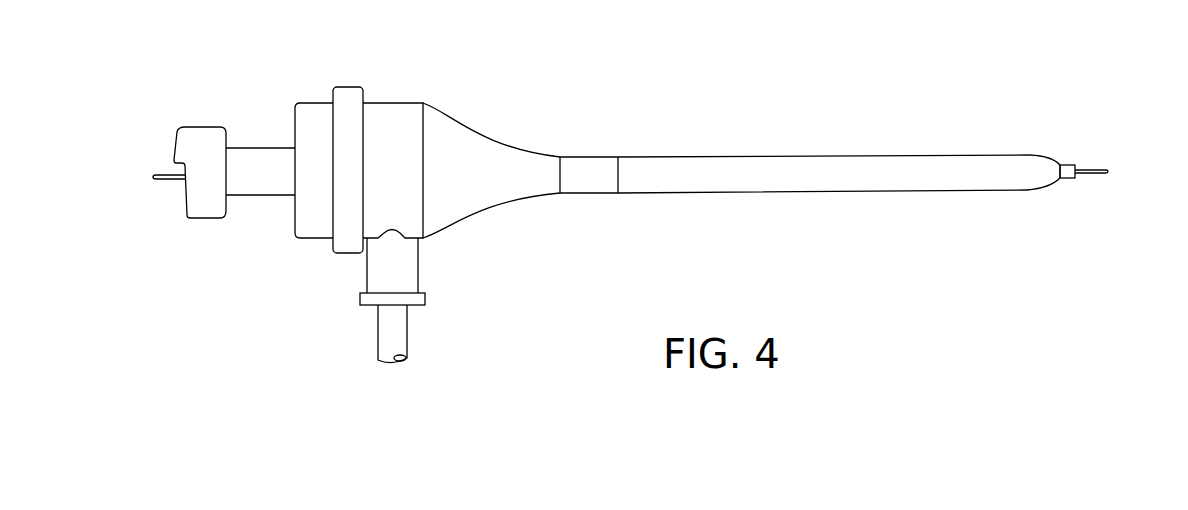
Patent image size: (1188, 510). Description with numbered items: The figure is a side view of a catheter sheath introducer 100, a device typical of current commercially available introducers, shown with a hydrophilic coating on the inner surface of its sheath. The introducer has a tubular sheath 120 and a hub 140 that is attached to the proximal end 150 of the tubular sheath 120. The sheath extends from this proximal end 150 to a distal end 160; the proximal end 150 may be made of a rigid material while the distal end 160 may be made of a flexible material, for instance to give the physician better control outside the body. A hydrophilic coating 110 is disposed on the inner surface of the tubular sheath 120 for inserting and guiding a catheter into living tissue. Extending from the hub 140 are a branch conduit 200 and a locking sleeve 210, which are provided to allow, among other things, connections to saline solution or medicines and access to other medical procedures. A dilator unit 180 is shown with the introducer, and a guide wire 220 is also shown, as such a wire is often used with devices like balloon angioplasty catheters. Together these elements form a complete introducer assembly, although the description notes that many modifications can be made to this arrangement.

The catheter sheath introducer 100 is at (479, 115).
The hydrophilic coating 110 is at (1072, 180).
The tubular sheath 120 is at (788, 165).
The hub 140 is at (413, 180).
The proximal end 150 is at (593, 157).
The distal end 160 is at (980, 155).
The dilator unit 180 is at (257, 147).
The branch conduit 200 is at (407, 335).
The locking sleeve 210 is at (378, 267).
The guide wire 220 is at (162, 182).